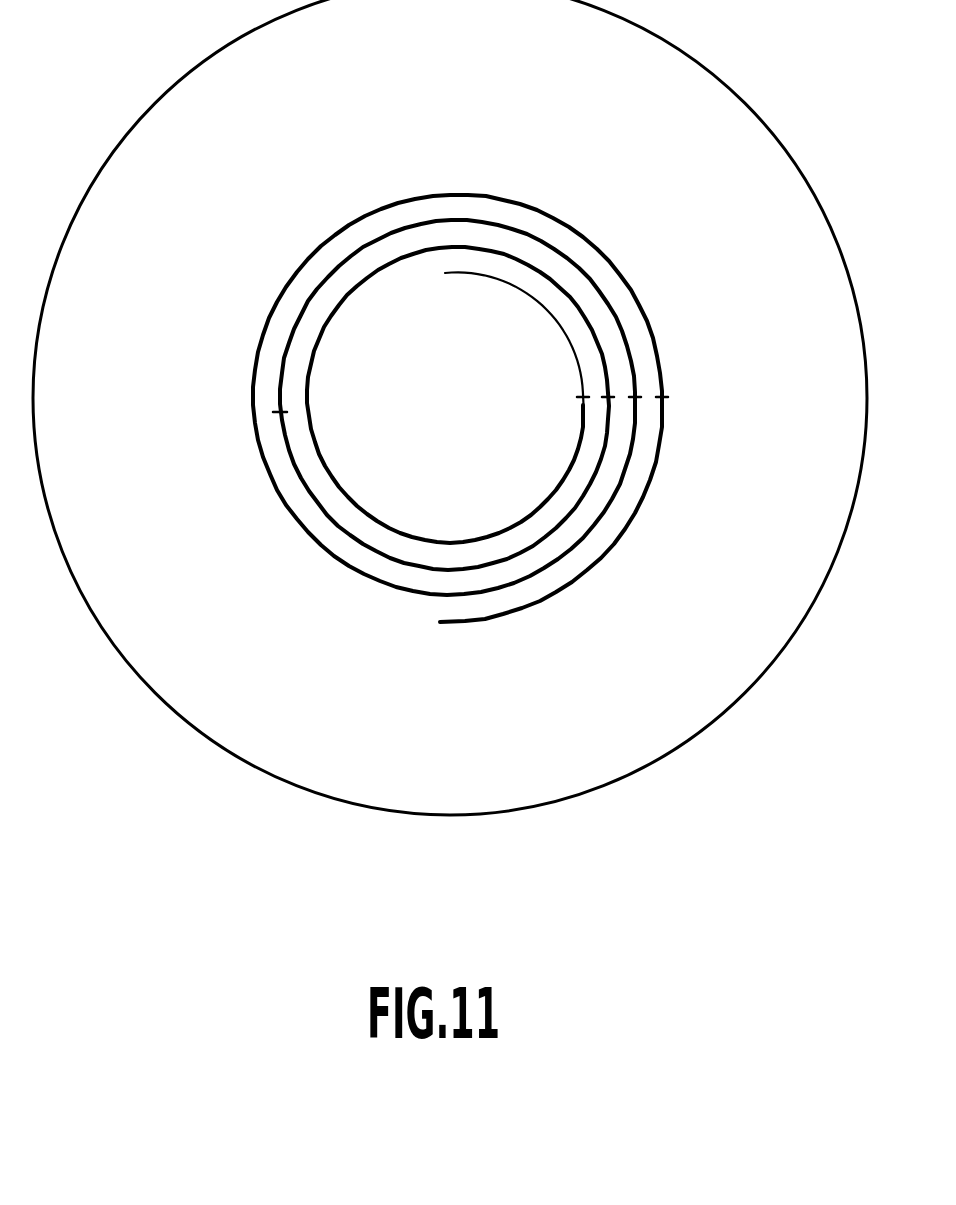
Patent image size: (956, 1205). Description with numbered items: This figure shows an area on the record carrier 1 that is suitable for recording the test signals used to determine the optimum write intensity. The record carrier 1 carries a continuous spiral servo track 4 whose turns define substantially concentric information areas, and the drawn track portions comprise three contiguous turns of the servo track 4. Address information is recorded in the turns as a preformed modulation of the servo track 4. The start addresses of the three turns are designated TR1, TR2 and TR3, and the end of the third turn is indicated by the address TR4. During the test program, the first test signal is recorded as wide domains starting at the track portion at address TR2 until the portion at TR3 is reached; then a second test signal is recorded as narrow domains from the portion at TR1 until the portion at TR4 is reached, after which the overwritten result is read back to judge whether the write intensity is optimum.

The record carrier 1 is at (832, 230).
The spiral servo track 4 is at (459, 193).
The start address of first turn TR1 is at (583, 400).
The start address of second turn TR2 is at (607, 395).
The start address of third turn TR3 is at (633, 395).
The end address of third turn TR4 is at (663, 400).